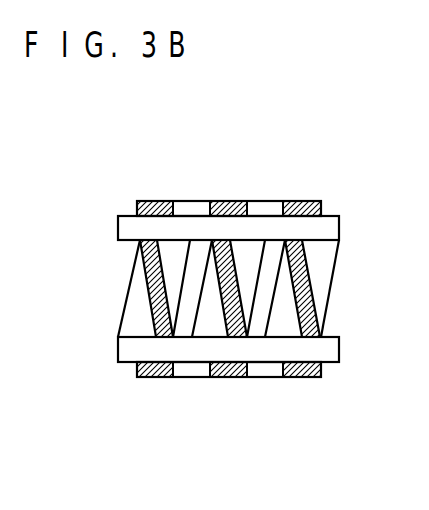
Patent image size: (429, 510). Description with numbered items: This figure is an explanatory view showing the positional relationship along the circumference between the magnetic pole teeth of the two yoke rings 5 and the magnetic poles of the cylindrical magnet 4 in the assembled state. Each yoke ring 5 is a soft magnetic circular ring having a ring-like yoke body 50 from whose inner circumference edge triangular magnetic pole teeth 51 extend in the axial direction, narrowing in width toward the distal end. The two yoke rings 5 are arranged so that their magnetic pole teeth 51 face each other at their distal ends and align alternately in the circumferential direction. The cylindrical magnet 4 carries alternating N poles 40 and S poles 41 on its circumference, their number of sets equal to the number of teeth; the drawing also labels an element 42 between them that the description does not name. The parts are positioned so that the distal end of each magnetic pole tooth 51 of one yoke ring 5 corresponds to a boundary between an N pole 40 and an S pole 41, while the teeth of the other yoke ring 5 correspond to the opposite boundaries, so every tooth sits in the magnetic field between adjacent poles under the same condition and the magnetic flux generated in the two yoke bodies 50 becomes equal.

The cylindrical magnet 4 is at (234, 286).
The N pole 40 is at (148, 201).
The S pole 41 is at (188, 201).
The insulating layer 42 is at (200, 201).
The yoke ring 5 is at (214, 287).
The yoke body 50 is at (118, 230).
The magnetic pole tooth 51 is at (170, 257).